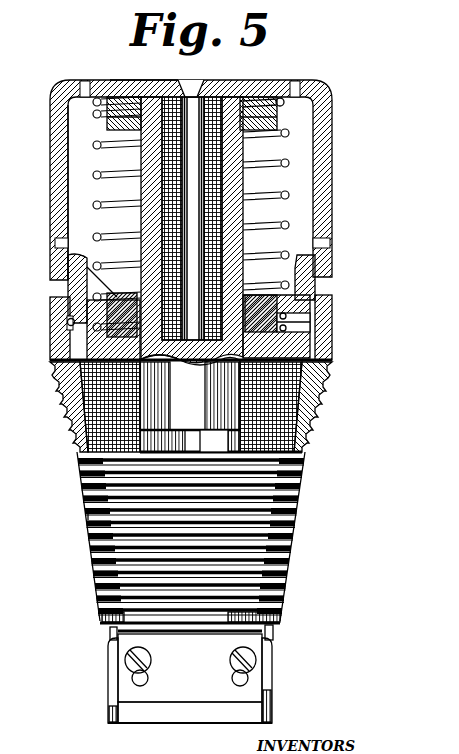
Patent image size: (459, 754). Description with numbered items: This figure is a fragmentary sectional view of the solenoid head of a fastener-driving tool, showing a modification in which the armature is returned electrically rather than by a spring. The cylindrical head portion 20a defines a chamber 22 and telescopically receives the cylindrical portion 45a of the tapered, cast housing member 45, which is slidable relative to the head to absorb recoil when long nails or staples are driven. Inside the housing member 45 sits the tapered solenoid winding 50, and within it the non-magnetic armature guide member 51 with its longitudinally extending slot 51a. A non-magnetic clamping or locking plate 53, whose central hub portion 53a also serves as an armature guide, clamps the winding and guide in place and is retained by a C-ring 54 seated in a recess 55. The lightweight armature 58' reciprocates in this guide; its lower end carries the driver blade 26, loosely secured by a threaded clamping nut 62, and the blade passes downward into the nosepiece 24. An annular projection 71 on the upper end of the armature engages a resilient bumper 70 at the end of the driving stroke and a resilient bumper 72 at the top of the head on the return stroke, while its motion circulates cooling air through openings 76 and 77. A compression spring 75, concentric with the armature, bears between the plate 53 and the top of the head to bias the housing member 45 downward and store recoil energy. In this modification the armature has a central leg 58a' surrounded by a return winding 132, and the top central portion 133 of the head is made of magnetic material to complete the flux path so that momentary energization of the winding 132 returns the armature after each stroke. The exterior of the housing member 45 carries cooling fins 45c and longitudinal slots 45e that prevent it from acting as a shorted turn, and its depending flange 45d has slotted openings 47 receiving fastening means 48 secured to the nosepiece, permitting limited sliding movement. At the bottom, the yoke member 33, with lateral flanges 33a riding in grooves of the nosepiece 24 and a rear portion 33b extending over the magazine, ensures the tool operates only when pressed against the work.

The head portion 20a is at (337, 102).
The top central portion of the head 133 is at (148, 80).
The openings 76 is at (86, 80).
The central leg 58a' is at (204, 75).
The annular flange or projection 71 is at (107, 124).
The resilient bumper 72 is at (272, 98).
The chamber 22 is at (78, 158).
The armature 58' is at (230, 214).
The compression spring 75 is at (286, 132).
The return winding 132 is at (223, 222).
The openings 77 is at (57, 243).
The resilient bumper 70 is at (77, 282).
The C-ring 54 is at (70, 331).
The recess 55 is at (70, 320).
The central hub portion 53a is at (278, 297).
The clamping or locking plate 53 is at (303, 348).
The cylindrical portion 45a is at (325, 317).
The housing member 45 is at (331, 372).
The armature guide member 51 is at (243, 402).
The solenoid winding 50 is at (277, 420).
The longitudinally extending slot 51a is at (263, 447).
The driver blade 26 is at (194, 418).
The clamping nut 62 is at (214, 441).
The cooling fins 45c is at (300, 500).
The longitudinally extending slots 45e is at (88, 515).
The yoke member 33 is at (108, 676).
The nosepiece 24 is at (116, 734).
The lateral flanges 33a is at (110, 712).
The yoke portion 33b is at (277, 643).
The depending flange 45d is at (113, 634).
The fastening means 48 is at (232, 651).
The slotted openings 47 is at (233, 680).